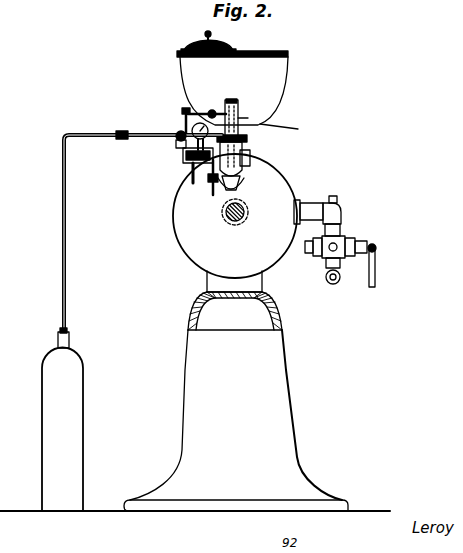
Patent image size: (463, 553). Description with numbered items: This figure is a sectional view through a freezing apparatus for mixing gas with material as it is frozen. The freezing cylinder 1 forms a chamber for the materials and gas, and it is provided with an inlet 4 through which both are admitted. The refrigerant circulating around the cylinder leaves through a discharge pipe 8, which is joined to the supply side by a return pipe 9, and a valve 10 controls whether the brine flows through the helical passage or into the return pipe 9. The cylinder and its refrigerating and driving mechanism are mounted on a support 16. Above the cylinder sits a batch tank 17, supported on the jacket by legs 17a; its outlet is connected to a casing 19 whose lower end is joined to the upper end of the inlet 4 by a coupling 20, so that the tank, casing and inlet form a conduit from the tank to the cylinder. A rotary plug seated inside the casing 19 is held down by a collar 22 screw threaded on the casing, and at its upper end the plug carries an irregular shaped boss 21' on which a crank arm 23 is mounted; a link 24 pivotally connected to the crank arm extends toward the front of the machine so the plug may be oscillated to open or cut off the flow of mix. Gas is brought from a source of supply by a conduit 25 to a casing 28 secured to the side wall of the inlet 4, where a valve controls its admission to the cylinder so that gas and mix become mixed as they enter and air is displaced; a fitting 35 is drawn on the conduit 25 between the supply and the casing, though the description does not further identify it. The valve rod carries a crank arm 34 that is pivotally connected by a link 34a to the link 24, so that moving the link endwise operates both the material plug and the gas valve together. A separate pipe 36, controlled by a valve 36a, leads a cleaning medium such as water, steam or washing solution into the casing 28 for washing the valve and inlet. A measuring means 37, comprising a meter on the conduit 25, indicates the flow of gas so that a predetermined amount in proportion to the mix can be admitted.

The freezing cylinder 1 is at (285, 184).
The inlet 4 is at (245, 162).
The discharge pipe 8 is at (310, 207).
The return pipe 9 is at (318, 258).
The valve 10 is at (343, 236).
The support 16 is at (284, 378).
The batch tank 17 is at (278, 71).
The legs 17a is at (297, 128).
The casing 19 is at (248, 120).
The coupling 20 is at (250, 143).
The boss 21' is at (234, 106).
The collar 22 is at (236, 110).
The crank arm 23 is at (226, 109).
The link 24 is at (185, 110).
The conduit for gas 25 is at (66, 290).
The casing 28 is at (188, 173).
The crank arm 34 is at (176, 156).
The link 34a is at (190, 126).
The coupling 35 is at (150, 134).
The pipe 36 is at (219, 212).
The valve 36a is at (215, 183).
The measuring means 37 is at (173, 141).